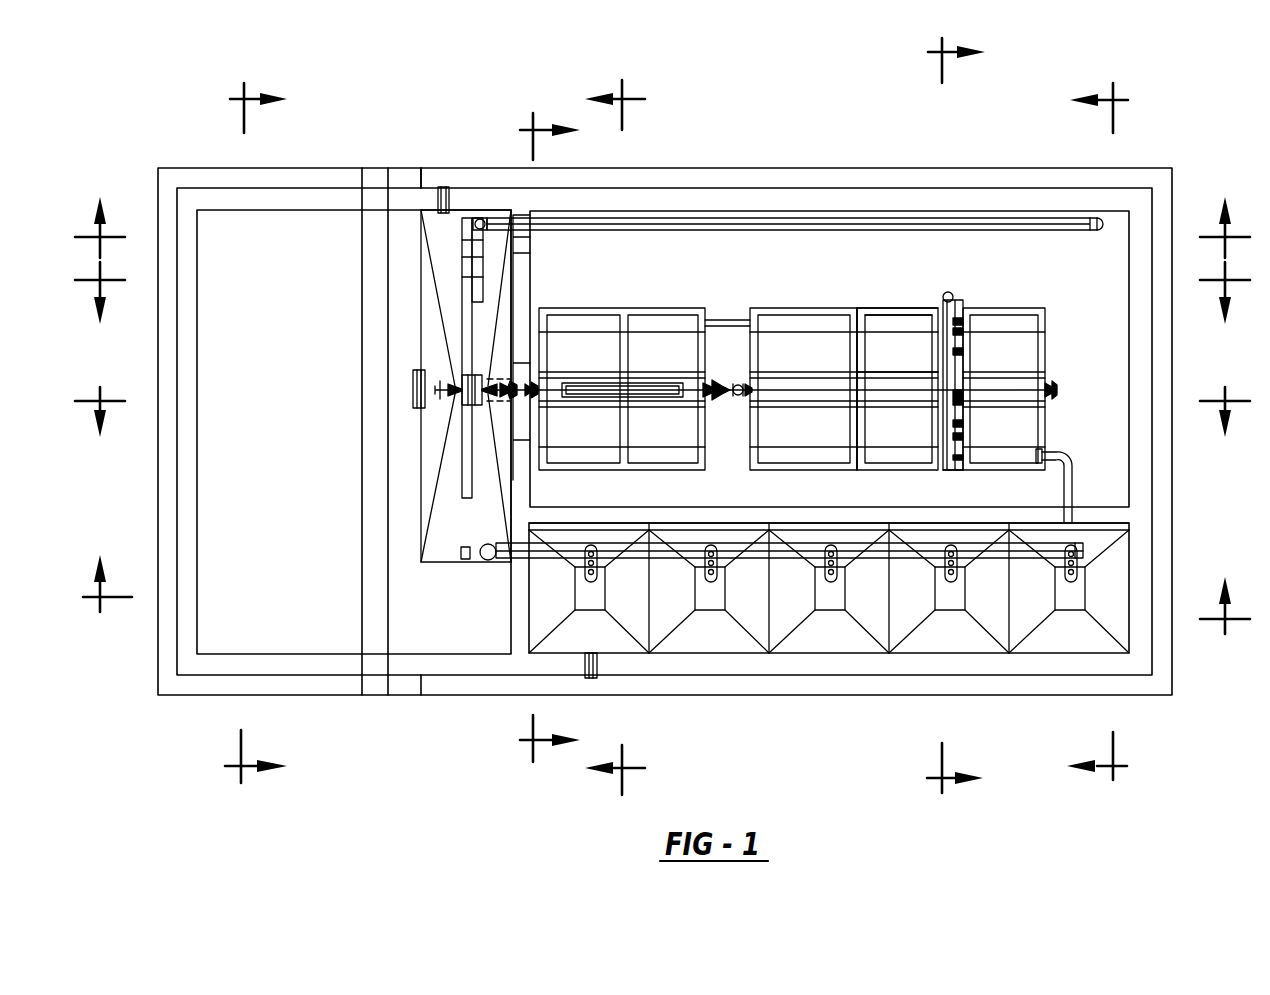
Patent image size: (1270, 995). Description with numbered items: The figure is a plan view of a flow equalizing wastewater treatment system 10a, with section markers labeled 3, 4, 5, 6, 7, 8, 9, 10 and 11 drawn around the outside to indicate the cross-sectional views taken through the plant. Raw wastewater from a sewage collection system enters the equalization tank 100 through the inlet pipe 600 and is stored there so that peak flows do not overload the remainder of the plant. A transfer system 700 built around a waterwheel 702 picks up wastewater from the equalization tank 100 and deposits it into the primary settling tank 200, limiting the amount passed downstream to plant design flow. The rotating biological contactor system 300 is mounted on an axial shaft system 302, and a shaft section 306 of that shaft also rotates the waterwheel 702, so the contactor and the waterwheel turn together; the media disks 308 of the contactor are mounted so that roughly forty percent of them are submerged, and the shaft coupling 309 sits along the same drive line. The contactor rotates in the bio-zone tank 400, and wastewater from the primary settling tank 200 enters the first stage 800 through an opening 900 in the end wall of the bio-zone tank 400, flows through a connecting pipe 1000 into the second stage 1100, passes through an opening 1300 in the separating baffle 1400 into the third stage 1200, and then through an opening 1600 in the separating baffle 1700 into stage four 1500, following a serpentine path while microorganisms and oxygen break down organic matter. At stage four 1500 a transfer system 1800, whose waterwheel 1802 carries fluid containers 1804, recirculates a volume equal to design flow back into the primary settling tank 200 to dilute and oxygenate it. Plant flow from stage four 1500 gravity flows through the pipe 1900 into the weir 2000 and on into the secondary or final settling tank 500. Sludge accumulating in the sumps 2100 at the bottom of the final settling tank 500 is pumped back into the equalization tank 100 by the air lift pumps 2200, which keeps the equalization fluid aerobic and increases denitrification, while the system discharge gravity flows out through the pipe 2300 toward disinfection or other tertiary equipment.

The equalization tank 100 is at (250, 258).
The flow equalizing wastewater treatment system 10a is at (453, 118).
The primary settling tank 200 is at (1078, 300).
The rotating biological contactor (RBC) system 300 is at (1062, 365).
The axial shaft system 302 is at (728, 408).
The shaft section 306 is at (453, 404).
The media disks 308 is at (585, 316).
The coupling column 309 is at (522, 356).
The bio-zone tank 400 is at (666, 306).
The secondary or final settling tank 500 is at (833, 632).
The inlet pipe 600 is at (443, 190).
The transfer system 700 is at (465, 320).
The waterwheel 702 is at (455, 551).
The first stage 800 is at (628, 418).
The opening 900 is at (537, 427).
The connecting pipe 1000 is at (787, 372).
The second stage 1100 is at (858, 298).
The third stage 1200 is at (912, 372).
The opening 1300 is at (857, 432).
The separating baffle 1400 is at (898, 317).
The stage four 1500 is at (1012, 373).
The opening 1600 is at (949, 291).
The separating baffle 1700 is at (930, 417).
The transfer system 1800 is at (1048, 445).
The waterwheel 1802 is at (950, 468).
The fluid containers 1804 is at (953, 377).
The pipe 1900 is at (1076, 500).
The weir 2000 is at (1035, 545).
The sumps 2100 is at (1070, 612).
The air lift pumps 2200 is at (595, 584).
The pipe 2300 is at (588, 680).
The section line 3- 3 is at (666, 616).
The section line 4- 4 is at (662, 441).
The section line 5- 5 is at (663, 304).
The section line 6- 6 is at (662, 197).
The section line 7- 7 is at (250, 439).
The section line 8- 8 is at (535, 443).
The section line 9- 9 is at (622, 437).
The section line 10- 10 is at (936, 435).
The section line 11- 11 is at (1113, 436).